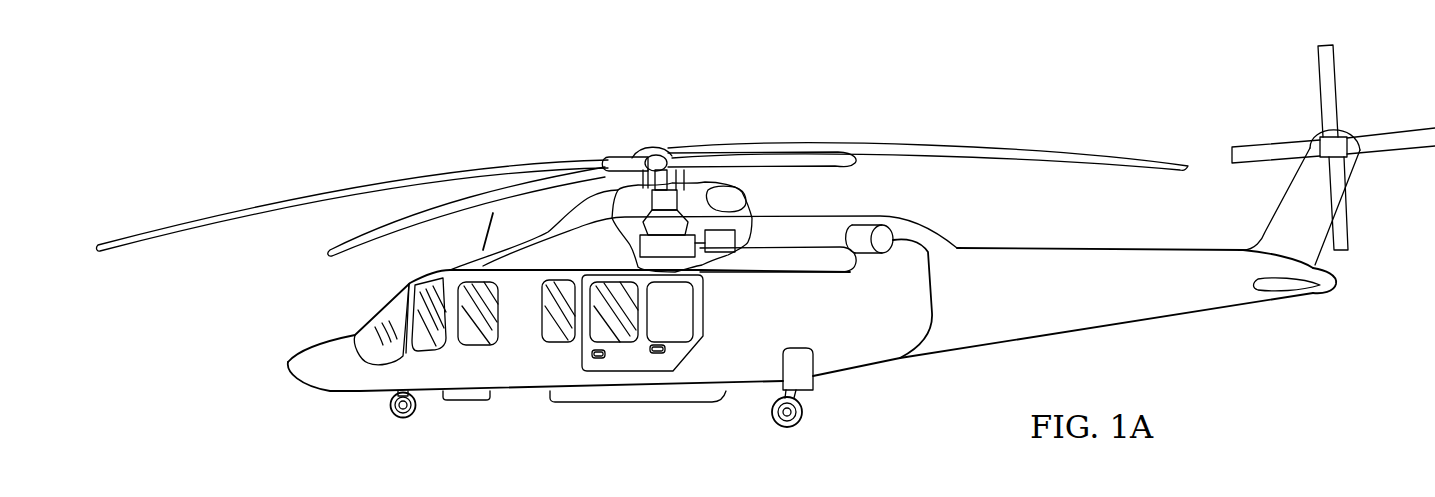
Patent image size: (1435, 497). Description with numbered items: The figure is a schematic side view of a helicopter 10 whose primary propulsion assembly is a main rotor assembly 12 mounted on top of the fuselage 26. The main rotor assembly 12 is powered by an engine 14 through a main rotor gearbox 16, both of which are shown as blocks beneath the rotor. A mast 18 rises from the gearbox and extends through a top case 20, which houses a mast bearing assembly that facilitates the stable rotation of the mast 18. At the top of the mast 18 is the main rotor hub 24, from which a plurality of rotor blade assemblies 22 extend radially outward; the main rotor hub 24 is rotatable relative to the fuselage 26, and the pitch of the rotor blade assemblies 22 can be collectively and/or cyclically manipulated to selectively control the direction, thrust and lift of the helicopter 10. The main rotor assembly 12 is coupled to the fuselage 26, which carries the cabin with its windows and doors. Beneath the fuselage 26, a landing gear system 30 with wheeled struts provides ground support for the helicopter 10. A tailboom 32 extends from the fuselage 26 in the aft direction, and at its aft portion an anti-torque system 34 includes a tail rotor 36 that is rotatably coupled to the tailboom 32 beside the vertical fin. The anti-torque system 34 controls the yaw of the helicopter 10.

The helicopter 10 is at (512, 86).
The main rotor assembly 12 is at (617, 113).
The engine 14 is at (725, 253).
The main rotor gearbox 16 is at (678, 257).
The mast 18 is at (668, 177).
The top case 20 is at (565, 216).
The rotor blade assemblies 22 is at (215, 214).
The main rotor hub 24 is at (658, 147).
The fuselage 26 is at (855, 381).
The landing gear system 30 is at (390, 408).
The tailboom 32 is at (1113, 249).
The anti-torque system 34 is at (1290, 105).
The tail rotor 36 is at (1254, 146).